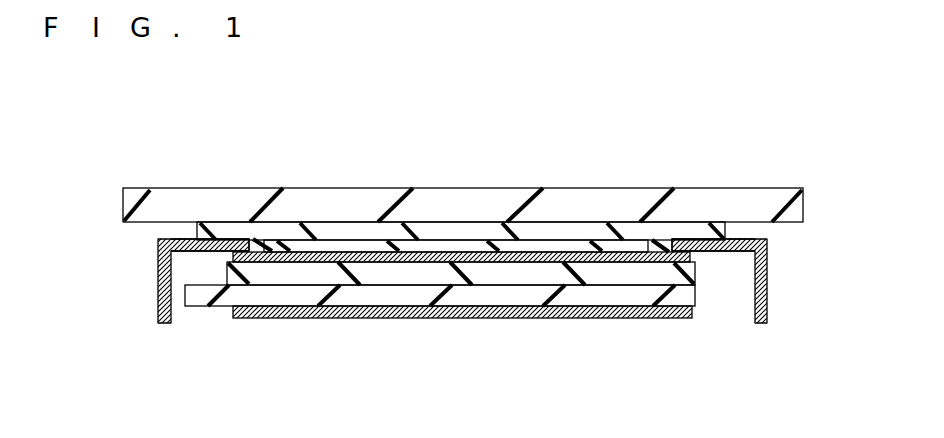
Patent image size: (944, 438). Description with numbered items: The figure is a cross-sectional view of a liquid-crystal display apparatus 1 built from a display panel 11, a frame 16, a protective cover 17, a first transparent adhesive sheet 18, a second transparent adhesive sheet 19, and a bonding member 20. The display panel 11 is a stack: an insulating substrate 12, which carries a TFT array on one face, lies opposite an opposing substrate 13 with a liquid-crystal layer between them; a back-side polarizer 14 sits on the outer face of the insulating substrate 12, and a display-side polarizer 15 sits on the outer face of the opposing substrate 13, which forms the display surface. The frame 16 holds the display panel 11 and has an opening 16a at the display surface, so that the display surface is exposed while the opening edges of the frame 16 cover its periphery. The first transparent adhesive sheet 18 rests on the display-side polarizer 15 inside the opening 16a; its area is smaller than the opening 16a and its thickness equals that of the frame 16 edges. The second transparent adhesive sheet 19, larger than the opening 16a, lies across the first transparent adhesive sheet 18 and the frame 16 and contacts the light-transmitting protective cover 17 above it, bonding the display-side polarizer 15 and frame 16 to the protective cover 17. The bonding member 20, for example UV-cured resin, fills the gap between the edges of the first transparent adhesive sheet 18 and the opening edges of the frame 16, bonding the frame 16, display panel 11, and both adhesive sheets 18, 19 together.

The display apparatus 1 is at (483, 113).
The display panel 11 is at (464, 318).
The insulating substrate 12 is at (513, 295).
The opposing substrate 13 is at (397, 270).
The back-side polarizer 14 is at (645, 318).
The display-side polarizer 15 is at (303, 260).
The frame 16 is at (158, 297).
The opening 16a is at (249, 240).
The protective cover 17 is at (610, 205).
The first transparent adhesive sheet 18 is at (477, 247).
The second transparent adhesive sheet 19 is at (366, 232).
The bonding member 20 is at (261, 239).